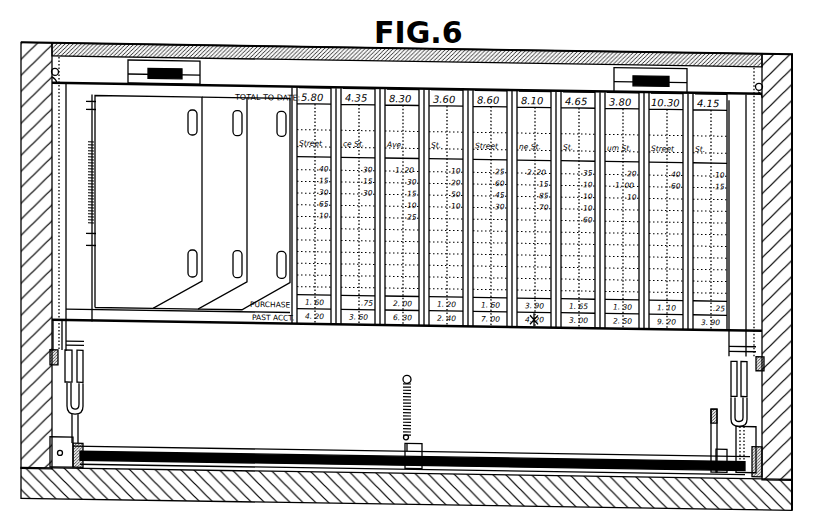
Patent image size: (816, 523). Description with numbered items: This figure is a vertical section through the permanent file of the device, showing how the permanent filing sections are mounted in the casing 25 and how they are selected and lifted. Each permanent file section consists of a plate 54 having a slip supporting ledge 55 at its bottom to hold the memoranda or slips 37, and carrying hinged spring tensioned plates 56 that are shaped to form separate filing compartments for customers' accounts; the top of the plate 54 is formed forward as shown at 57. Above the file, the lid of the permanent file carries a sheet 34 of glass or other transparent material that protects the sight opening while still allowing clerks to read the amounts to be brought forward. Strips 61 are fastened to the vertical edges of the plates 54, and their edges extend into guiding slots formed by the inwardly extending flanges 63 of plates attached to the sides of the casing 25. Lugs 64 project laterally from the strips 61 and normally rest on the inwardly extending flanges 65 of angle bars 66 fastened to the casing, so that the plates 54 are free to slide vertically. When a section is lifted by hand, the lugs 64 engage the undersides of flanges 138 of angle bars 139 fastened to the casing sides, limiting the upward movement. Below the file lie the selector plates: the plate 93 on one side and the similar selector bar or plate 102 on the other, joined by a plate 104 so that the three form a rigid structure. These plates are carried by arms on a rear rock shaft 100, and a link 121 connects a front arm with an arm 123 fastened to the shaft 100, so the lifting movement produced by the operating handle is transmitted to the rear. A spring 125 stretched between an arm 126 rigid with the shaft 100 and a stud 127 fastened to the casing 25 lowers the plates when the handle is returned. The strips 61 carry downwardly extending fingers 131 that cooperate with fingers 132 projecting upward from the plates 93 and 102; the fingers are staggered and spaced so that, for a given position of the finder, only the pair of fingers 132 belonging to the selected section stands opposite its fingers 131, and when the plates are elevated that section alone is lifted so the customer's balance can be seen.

The casing 25 is at (774, 53).
The sheet 34 is at (541, 46).
The memoranda or slips 37 is at (534, 312).
The plate 54 is at (168, 312).
The slip supporting ledge 55 is at (233, 320).
The spring tensioned plates 56 is at (135, 296).
The forwardly formed top 57 is at (143, 83).
The strips 61 is at (78, 342).
The flanges 63 is at (60, 137).
The lugs 64 is at (58, 328).
The flanges 65 is at (82, 357).
The angle bars 66 is at (58, 348).
The plate 93 is at (757, 432).
The rock shaft 100 is at (512, 447).
The selector bar or plate 102 is at (78, 427).
The plate 104 is at (277, 450).
The link 121 is at (712, 416).
The arm 123 is at (714, 431).
The spring 125 is at (413, 401).
The arm 126 is at (417, 441).
The stud 127 is at (411, 374).
The fingers 131 is at (78, 371).
The fingers 132 is at (80, 395).
The flanges 138 is at (58, 80).
The angle bars 139 is at (58, 68).